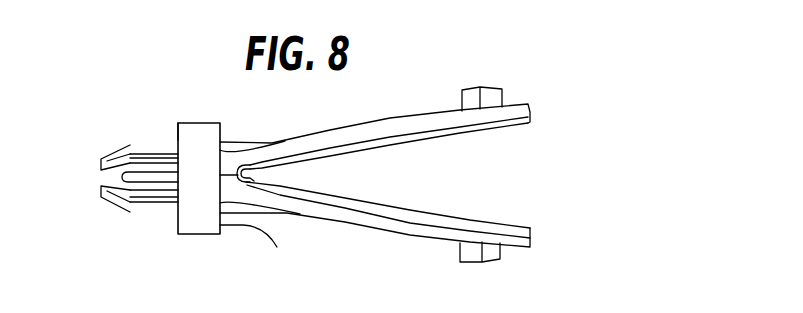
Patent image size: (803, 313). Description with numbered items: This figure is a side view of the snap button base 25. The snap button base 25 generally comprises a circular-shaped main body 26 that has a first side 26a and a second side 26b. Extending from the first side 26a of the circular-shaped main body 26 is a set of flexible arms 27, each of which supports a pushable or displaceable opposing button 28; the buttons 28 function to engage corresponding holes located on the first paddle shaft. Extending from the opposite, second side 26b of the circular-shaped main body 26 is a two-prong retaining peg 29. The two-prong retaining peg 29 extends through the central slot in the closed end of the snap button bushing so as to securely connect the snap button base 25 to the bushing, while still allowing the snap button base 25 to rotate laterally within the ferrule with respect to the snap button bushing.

The snap button base 25 is at (106, 172).
The circular-shaped main body 26 is at (202, 235).
The first side 26a is at (264, 251).
The second side 26b is at (177, 137).
The flexible arms 27 is at (452, 131).
The opposing button 28 is at (497, 87).
The two-prong retaining peg 29 is at (82, 190).